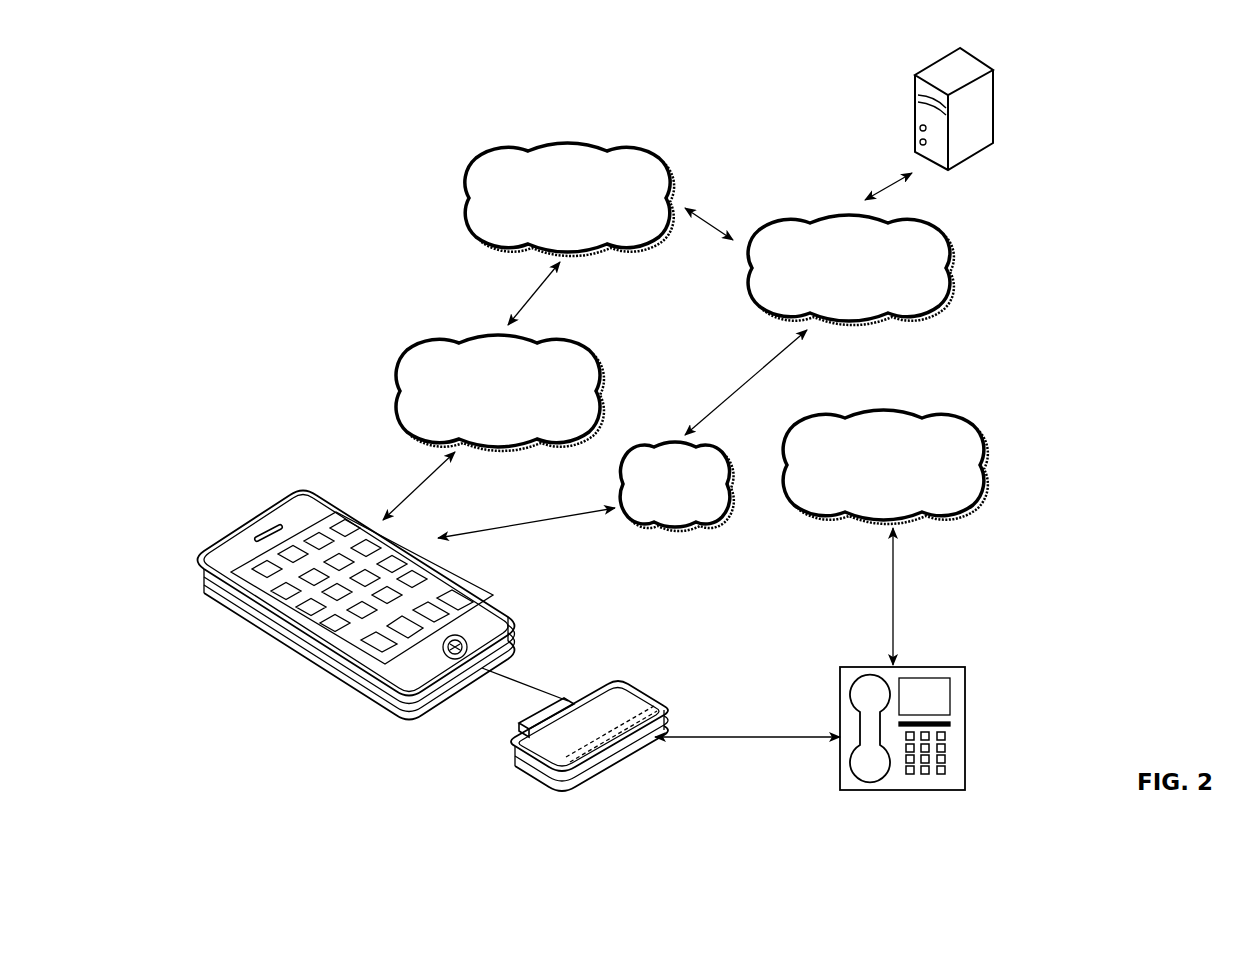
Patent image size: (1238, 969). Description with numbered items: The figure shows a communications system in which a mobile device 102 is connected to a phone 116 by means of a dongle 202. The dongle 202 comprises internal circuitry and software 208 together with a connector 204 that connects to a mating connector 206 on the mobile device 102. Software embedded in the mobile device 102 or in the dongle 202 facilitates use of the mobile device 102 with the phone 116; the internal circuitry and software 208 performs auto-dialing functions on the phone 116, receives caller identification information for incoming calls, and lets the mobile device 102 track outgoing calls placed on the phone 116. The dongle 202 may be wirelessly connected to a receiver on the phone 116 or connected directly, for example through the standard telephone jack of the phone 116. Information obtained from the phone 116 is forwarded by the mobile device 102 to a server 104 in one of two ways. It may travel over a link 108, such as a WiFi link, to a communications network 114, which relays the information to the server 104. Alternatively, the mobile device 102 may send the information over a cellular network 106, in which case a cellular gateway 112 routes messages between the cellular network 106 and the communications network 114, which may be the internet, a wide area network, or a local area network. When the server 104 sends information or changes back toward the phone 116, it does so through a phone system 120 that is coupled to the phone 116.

The mobile device 102 is at (228, 553).
The server 104 is at (987, 65).
The cellular network 106 is at (383, 345).
The link 108 is at (702, 530).
The cellular gateway 112 is at (455, 150).
The communications network 114 is at (968, 278).
The phone 116 is at (983, 720).
The phone system 120 is at (950, 516).
The dongle 202 is at (561, 720).
The connector 204 is at (558, 706).
The connector 206 is at (482, 669).
The internal circuitry and software 208 is at (535, 742).